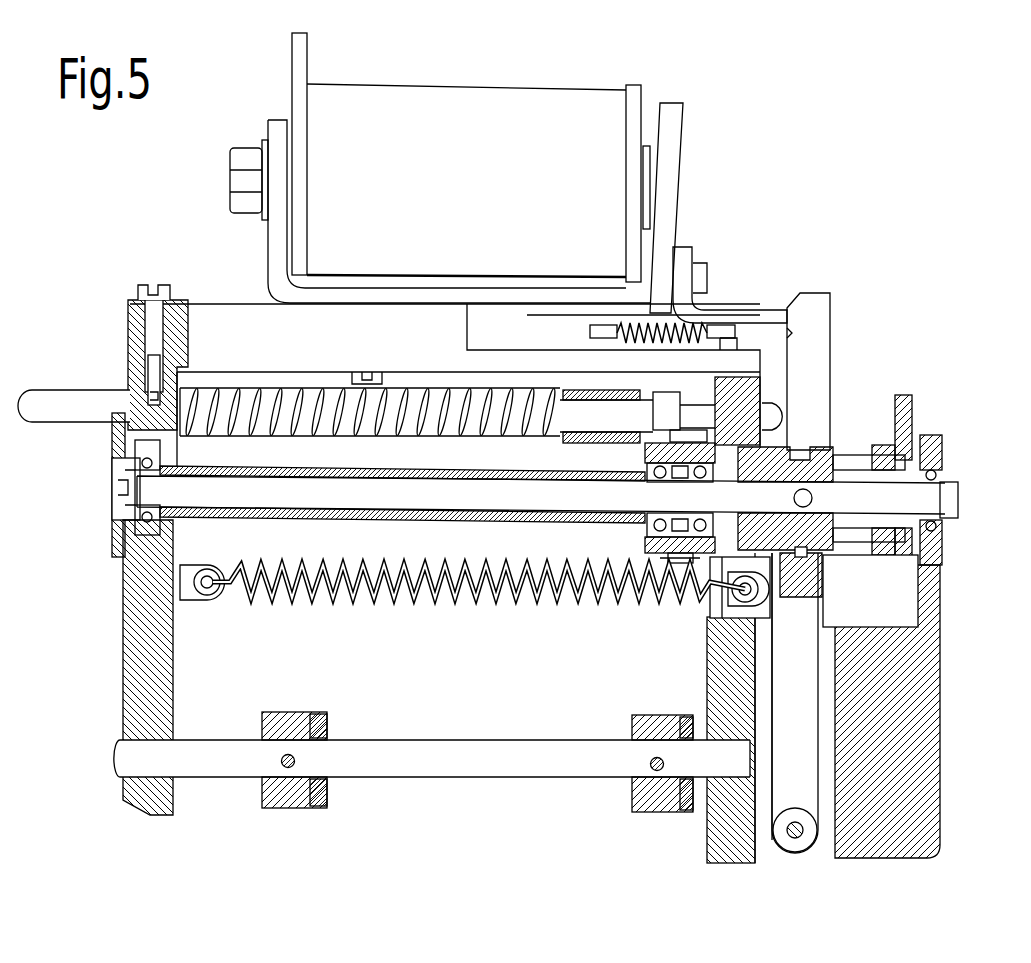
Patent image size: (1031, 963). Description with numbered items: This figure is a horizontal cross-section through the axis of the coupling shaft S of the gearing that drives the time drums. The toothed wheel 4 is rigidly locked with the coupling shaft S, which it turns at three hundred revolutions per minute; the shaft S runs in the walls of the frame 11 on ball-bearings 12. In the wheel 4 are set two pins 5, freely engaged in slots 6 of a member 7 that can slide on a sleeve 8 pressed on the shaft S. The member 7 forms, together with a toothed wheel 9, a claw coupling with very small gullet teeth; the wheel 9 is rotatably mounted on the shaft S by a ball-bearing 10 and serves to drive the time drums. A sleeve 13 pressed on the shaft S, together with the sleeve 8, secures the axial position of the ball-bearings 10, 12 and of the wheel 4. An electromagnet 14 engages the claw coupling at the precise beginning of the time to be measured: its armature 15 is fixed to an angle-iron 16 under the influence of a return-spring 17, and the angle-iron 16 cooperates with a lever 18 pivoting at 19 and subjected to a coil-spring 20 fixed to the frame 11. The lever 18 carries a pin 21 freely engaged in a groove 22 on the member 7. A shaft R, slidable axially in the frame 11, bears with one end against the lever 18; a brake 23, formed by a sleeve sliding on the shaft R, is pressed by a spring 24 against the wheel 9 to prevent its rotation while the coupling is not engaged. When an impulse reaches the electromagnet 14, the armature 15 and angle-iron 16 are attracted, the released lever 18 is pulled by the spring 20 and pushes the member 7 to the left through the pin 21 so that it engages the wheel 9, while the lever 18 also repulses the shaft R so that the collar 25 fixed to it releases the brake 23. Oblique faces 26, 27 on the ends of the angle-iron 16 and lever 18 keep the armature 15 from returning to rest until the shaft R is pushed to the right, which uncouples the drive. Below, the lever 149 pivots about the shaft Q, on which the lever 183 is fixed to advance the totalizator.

The toothed wheel 4 is at (910, 415).
The pins 5 is at (860, 465).
The slots 6 is at (842, 455).
The member 7 is at (790, 450).
The sleeve 8 is at (840, 545).
The toothed wheel 9 is at (650, 440).
The ball-bearing 10 is at (650, 482).
The frame 11 is at (140, 642).
The ball-bearings 12 is at (110, 548).
The sleeve 13 is at (332, 513).
The electromagnet 14 is at (437, 105).
The armature 15 is at (667, 167).
The angle-iron 16 is at (742, 318).
The return-spring 17 is at (655, 335).
The lever 18 is at (805, 735).
The pivot 19 is at (795, 822).
The coil-spring 20 is at (382, 600).
The pin 21 is at (812, 498).
The groove 22 is at (795, 600).
The brake 23 is at (620, 445).
The spring 24 is at (360, 420).
The collar 25 is at (668, 395).
The oblique face 26 is at (790, 334).
The oblique face 27 is at (795, 300).
The lever 149 is at (687, 814).
The lever 183 is at (318, 812).
The shaft R is at (48, 403).
The coupling shaft S is at (935, 500).
The shaft Q is at (133, 765).